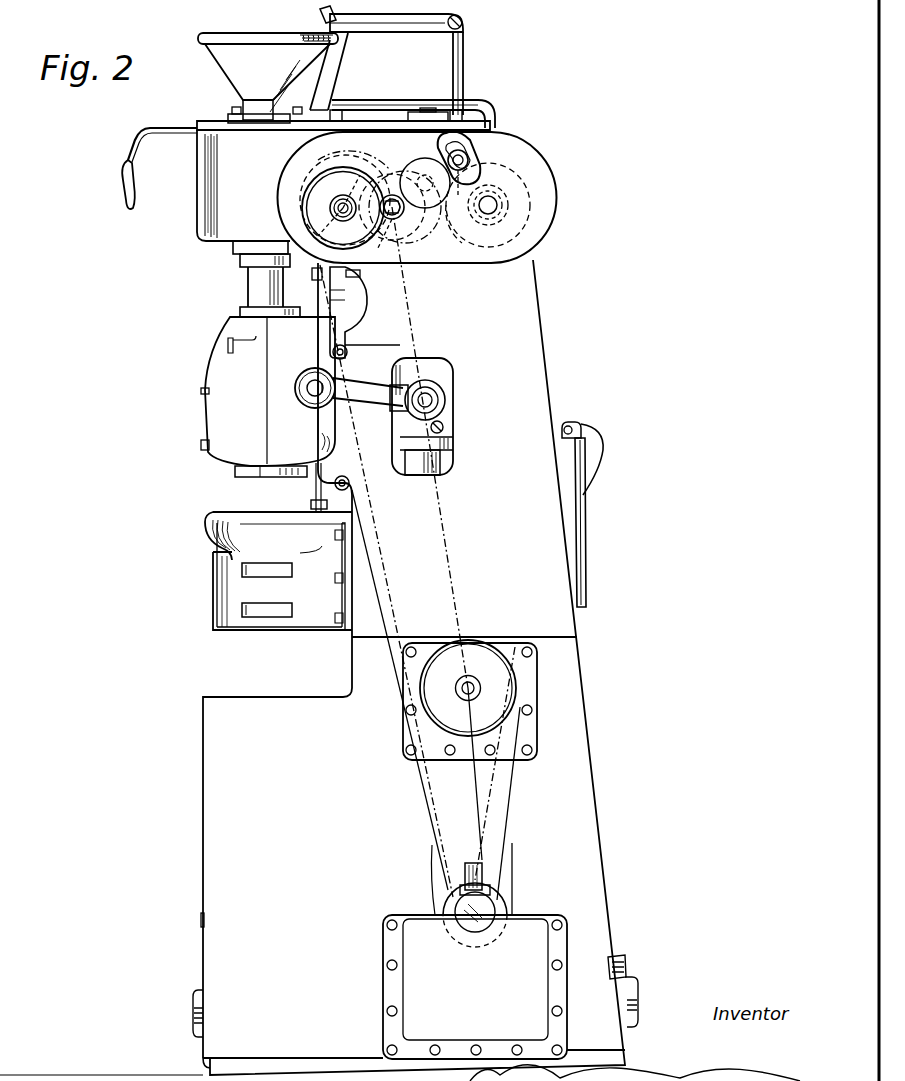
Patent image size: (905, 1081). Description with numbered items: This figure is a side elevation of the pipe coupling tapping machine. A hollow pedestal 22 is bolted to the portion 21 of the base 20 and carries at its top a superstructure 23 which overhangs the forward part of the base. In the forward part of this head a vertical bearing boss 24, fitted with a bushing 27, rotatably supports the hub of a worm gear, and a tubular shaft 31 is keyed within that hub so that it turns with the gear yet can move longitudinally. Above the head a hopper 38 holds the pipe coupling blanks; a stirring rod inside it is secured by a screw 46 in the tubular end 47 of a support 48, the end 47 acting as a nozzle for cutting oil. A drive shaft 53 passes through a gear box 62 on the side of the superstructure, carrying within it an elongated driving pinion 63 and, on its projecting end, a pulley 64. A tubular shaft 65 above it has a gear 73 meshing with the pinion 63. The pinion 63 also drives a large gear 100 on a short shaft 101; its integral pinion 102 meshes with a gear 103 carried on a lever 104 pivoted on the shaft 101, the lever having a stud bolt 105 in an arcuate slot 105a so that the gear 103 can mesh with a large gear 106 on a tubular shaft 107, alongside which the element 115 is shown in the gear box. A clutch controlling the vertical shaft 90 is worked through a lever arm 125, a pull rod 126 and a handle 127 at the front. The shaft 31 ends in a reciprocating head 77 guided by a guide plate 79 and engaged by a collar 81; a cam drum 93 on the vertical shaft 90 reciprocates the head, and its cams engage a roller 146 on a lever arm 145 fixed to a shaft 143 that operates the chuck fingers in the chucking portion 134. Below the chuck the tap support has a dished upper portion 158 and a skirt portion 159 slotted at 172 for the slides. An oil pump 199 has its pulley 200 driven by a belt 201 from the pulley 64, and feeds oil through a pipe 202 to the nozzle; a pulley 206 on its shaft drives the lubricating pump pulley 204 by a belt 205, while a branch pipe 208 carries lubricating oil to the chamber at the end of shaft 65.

The base 20 is at (208, 813).
The portion of the base 21 is at (571, 662).
The hollow pedestal 22 is at (550, 448).
The superstructure 23 is at (243, 185).
The bearing boss 24 is at (233, 248).
The bushing 27 is at (243, 261).
The tubular shaft 31 is at (255, 288).
The hopper 38 is at (268, 78).
The screw 46 is at (319, 13).
The tubular end 47 is at (322, 33).
The support 48 is at (340, 66).
The shaft 53 is at (344, 222).
The gear box 62 is at (547, 197).
The driving pinion 63 is at (340, 217).
The pulley 64 is at (308, 212).
The tubular shaft 65 is at (320, 158).
The gear 73 is at (363, 160).
The reciprocating head 77 is at (220, 358).
The guide plate 79 is at (342, 319).
The collar 81 is at (247, 312).
The vertical shaft 90 is at (418, 462).
The cam drum 93 is at (408, 428).
The large gear 100 is at (382, 240).
The short shaft 101 is at (394, 220).
The pinion 102 is at (360, 185).
The gear 103 is at (435, 220).
The lever 104 is at (437, 158).
The stud bolt 105 is at (468, 160).
The arcuate slot 105a is at (461, 145).
The large gear 106 is at (472, 241).
The tubular shaft 107 is at (497, 209).
The pulley 115 is at (504, 190).
The lever arm 125 is at (443, 110).
The pull rod 126 is at (190, 127).
The handle 127 is at (132, 180).
The chucking portion 134 is at (262, 470).
The shaft 143 is at (310, 394).
The lever arm 145 is at (370, 378).
The roller 146 is at (437, 380).
The dished upper portion 158 is at (238, 514).
The skirt portion 159 is at (217, 589).
The slot 172 is at (278, 572).
The oil pump 199 is at (480, 870).
The pulley 200 is at (509, 907).
The belt 201 is at (436, 508).
The pipe 202 is at (462, 66).
The pulley 204 is at (487, 645).
The belt 205 is at (510, 787).
The pulley 206 is at (480, 902).
The branch pipe 208 is at (398, 100).